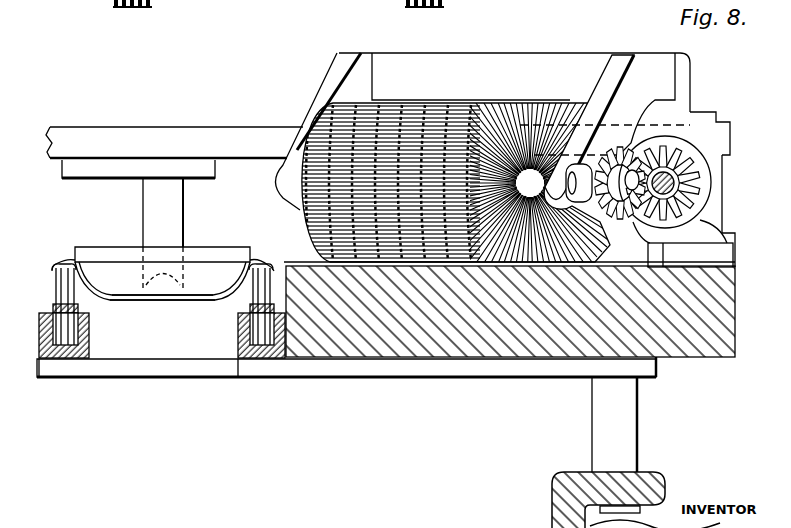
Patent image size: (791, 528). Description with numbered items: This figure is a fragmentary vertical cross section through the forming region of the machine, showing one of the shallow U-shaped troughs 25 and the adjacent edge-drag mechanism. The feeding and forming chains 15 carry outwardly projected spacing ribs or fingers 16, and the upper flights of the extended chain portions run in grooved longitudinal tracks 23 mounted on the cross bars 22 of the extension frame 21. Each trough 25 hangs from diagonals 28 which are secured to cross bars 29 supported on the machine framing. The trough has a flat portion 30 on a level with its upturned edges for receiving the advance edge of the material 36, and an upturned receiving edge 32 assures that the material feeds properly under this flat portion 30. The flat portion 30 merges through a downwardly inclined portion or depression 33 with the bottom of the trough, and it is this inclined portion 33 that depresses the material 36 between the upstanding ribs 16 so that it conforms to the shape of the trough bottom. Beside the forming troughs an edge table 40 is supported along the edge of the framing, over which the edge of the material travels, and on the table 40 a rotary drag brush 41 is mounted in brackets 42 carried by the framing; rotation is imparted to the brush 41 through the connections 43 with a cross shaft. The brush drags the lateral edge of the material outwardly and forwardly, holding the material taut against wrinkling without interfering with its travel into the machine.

The feeding and forming chains 15 is at (162, 335).
The spacing ribs or fingers 16 is at (152, 304).
The extension frame 21 is at (140, 212).
The cross bars 22 is at (351, 442).
The grooved longitudinal tracks 23 is at (144, 387).
The shallow U-shaped troughs 25 is at (162, 315).
The diagonals 28 is at (174, 137).
The cross bars 29 is at (502, 126).
The flat portion 30 is at (173, 239).
The upturned receiving edge 32 is at (159, 244).
The downwardly inclined portion or depression 33 is at (162, 255).
The material 36 is at (162, 330).
The edge table 40 is at (526, 334).
The rotary drag brush 41 is at (455, 154).
The brackets 42 is at (506, 146).
The connections 43 is at (684, 182).